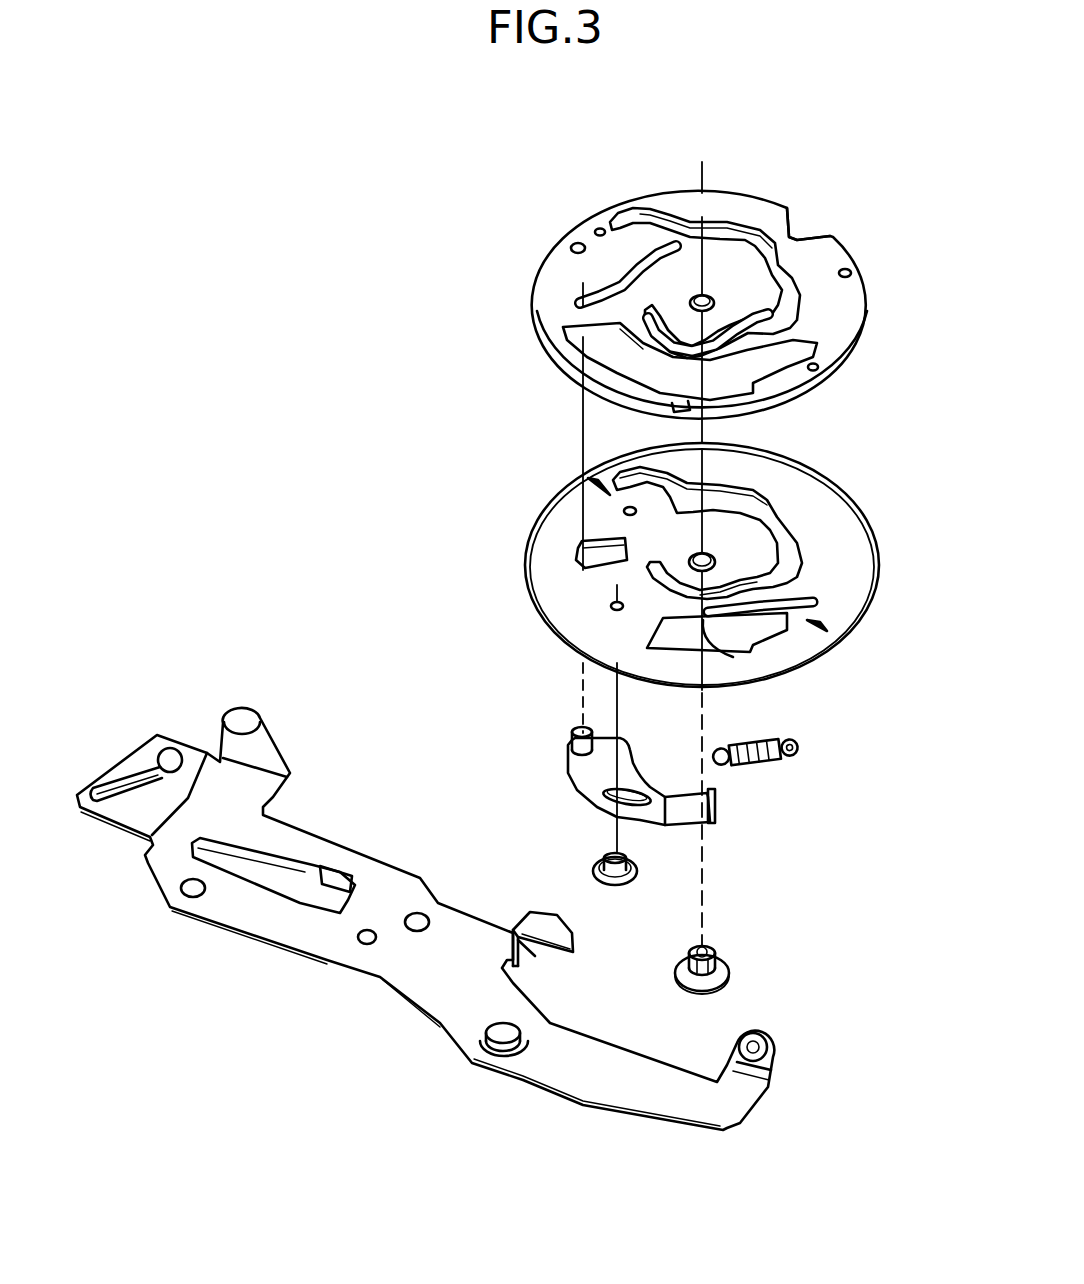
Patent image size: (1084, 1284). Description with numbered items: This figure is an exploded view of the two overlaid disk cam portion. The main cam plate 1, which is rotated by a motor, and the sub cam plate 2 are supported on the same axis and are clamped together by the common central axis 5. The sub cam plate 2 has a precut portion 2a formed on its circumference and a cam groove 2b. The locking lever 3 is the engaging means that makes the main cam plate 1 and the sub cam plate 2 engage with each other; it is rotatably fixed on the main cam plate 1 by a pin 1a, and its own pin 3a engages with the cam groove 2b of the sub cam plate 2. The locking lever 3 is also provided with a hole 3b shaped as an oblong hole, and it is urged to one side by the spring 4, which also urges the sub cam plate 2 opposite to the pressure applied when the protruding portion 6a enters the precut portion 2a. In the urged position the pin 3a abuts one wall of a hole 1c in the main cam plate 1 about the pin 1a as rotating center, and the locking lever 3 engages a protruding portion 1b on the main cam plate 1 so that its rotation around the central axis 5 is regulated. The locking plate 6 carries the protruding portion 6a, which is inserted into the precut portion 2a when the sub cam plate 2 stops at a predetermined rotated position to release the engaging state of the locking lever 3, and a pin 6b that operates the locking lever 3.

The main cam plate 1 is at (860, 557).
The pin 1a is at (590, 872).
The protruding portion 1b is at (710, 620).
The hole 1c is at (583, 562).
The sub cam plate 2 is at (830, 257).
The precut portion 2a is at (800, 225).
The cam groove 2b is at (612, 266).
The locking lever 3 is at (700, 830).
The pin 3a is at (574, 737).
The hole 3b is at (640, 820).
The spring 4 is at (772, 763).
The central axis 5 is at (728, 963).
The locking plate 6 is at (262, 922).
The protruding portion 6a is at (550, 935).
The pin 6b is at (770, 1050).